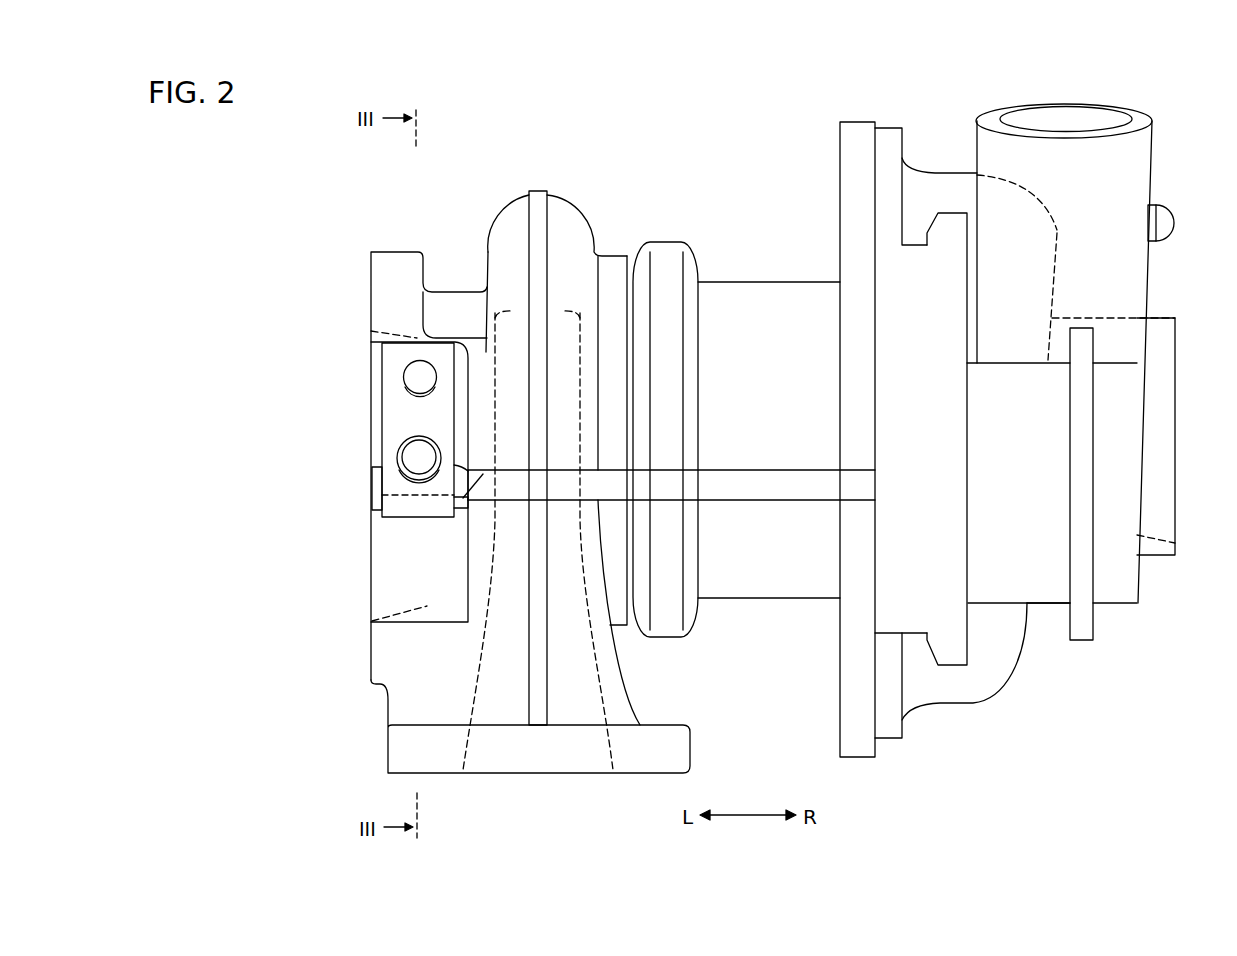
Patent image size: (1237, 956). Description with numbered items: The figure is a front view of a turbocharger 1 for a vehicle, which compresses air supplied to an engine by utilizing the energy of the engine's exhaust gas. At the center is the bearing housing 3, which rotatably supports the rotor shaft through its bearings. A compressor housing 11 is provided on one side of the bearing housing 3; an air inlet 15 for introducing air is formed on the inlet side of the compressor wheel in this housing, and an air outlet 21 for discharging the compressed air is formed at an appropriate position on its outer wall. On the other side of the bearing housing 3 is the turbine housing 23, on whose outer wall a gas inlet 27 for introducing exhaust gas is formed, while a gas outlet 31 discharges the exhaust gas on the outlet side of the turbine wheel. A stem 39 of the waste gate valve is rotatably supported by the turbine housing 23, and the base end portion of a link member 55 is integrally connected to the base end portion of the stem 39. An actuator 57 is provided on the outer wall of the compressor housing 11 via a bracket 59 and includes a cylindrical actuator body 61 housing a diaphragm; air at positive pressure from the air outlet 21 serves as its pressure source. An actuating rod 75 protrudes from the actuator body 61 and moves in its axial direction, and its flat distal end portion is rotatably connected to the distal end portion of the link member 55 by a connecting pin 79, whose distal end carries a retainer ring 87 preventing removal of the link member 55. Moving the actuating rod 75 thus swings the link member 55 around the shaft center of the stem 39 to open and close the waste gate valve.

The turbocharger 1 is at (733, 134).
The bearing housing 3 is at (766, 281).
The compressor housing 11 is at (934, 171).
The air inlet 15 is at (1093, 345).
The air outlet 21 is at (1068, 118).
The turbine housing 23 is at (503, 208).
The gas inlet 27 is at (612, 740).
The gas outlet 31 is at (390, 613).
The stem 39 is at (408, 377).
The link member 55 is at (385, 420).
The actuator 57 is at (1010, 363).
The bracket 59 is at (973, 704).
The actuator body 61 is at (1041, 598).
The actuating rod 75 is at (789, 469).
The connecting pin 79 is at (415, 460).
The retainer ring 87 is at (400, 483).